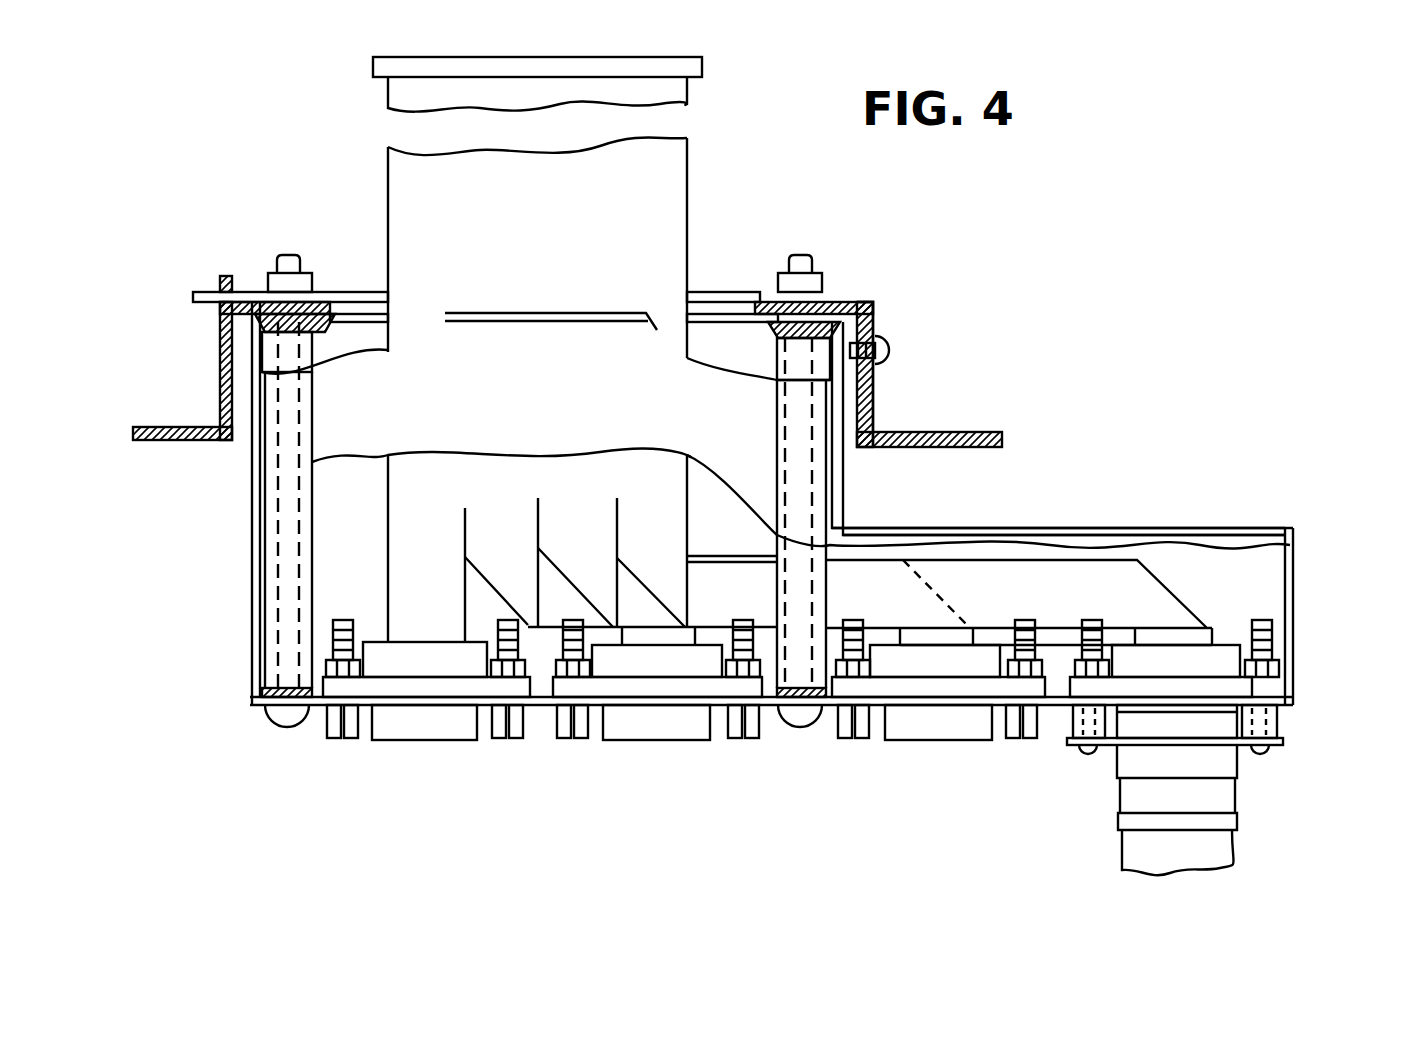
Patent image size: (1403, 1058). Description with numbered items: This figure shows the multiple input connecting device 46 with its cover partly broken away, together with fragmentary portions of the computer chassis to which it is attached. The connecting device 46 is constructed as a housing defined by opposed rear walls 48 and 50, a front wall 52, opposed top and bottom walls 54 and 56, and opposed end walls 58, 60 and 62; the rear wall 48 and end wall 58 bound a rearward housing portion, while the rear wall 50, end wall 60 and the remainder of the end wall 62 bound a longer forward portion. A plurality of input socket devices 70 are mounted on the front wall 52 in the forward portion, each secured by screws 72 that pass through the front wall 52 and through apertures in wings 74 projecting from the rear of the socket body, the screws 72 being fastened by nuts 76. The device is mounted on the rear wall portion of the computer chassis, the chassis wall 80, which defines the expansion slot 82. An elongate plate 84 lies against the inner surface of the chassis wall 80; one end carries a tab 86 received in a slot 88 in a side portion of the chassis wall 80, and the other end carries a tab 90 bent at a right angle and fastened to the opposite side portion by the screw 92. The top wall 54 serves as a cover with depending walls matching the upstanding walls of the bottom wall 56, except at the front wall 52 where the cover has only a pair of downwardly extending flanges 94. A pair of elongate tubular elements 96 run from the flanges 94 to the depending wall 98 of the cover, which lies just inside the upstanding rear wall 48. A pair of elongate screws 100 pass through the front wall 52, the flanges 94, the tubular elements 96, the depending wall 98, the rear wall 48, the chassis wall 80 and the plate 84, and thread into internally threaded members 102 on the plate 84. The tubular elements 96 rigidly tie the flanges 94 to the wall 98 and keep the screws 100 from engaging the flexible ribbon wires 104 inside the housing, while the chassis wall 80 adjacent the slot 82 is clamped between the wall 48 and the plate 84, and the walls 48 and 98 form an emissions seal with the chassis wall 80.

The connecting device 46 is at (1102, 226).
The rear wall 48 is at (718, 296).
The rear wall 50 is at (1115, 530).
The front wall 52 is at (527, 706).
The top wall 54 is at (583, 363).
The bottom wall 56 is at (360, 531).
The end wall 58 is at (845, 478).
The end wall 60 is at (1293, 556).
The end wall 62 is at (250, 608).
The input socket device 70 is at (425, 742).
The screw 72 is at (363, 590).
The wing 74 is at (368, 692).
The nut 76 is at (363, 660).
The chassis wall 80 is at (918, 420).
The expansion slot 82 is at (330, 314).
The elongate plate 84 is at (858, 306).
The tab 86 is at (220, 296).
The slot 88 is at (224, 290).
The tab 90 is at (876, 326).
The screw 92 is at (890, 350).
The flange 94 is at (252, 703).
The tubular element 96 is at (268, 488).
The depending wall 98 is at (320, 332).
The elongate screw 100 is at (288, 255).
The internally threaded member 102 is at (262, 300).
The flexible ribbon wire 104 is at (655, 505).